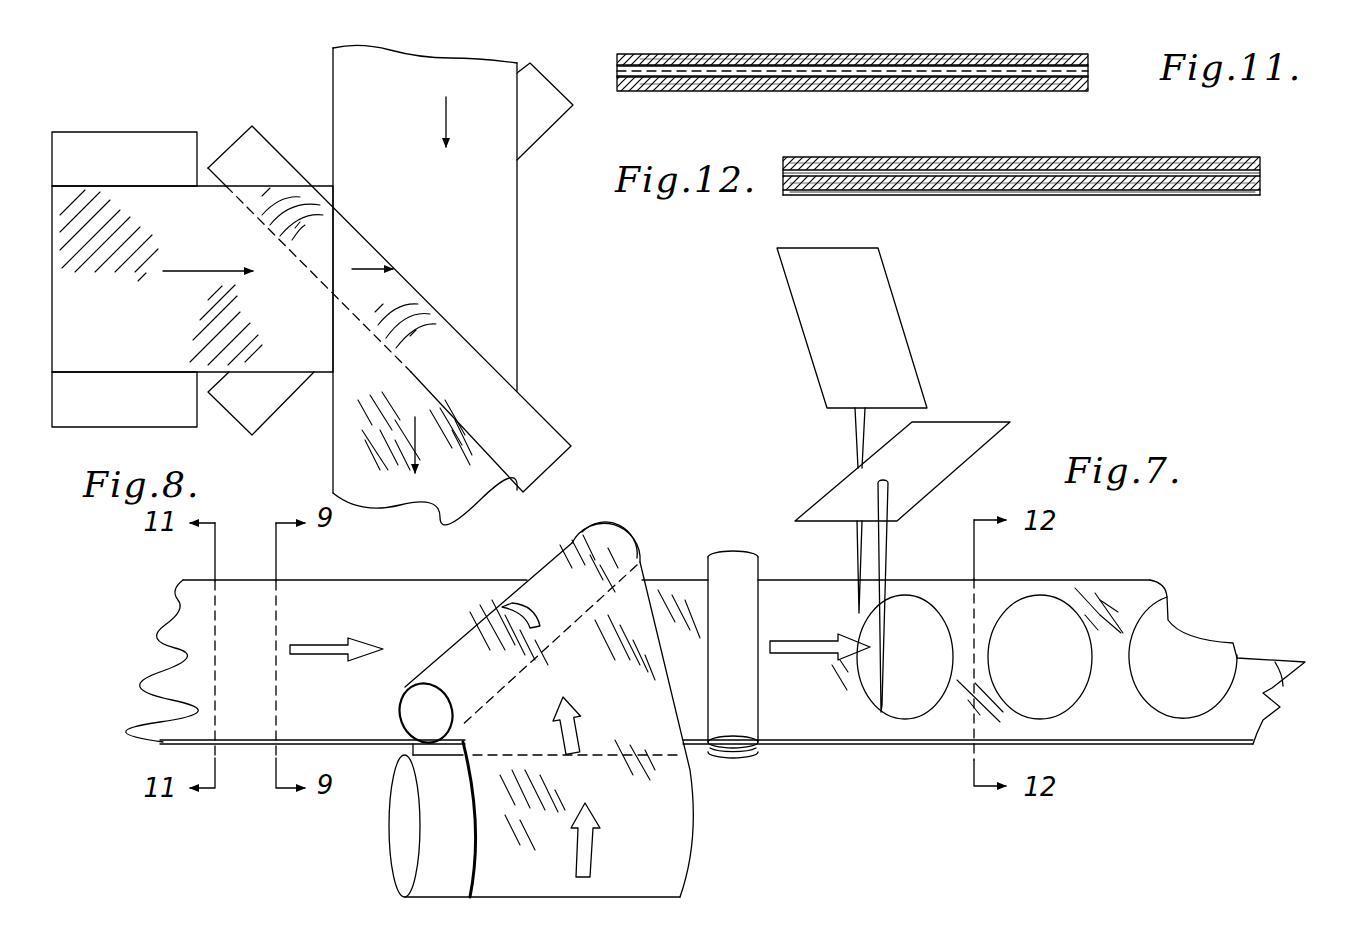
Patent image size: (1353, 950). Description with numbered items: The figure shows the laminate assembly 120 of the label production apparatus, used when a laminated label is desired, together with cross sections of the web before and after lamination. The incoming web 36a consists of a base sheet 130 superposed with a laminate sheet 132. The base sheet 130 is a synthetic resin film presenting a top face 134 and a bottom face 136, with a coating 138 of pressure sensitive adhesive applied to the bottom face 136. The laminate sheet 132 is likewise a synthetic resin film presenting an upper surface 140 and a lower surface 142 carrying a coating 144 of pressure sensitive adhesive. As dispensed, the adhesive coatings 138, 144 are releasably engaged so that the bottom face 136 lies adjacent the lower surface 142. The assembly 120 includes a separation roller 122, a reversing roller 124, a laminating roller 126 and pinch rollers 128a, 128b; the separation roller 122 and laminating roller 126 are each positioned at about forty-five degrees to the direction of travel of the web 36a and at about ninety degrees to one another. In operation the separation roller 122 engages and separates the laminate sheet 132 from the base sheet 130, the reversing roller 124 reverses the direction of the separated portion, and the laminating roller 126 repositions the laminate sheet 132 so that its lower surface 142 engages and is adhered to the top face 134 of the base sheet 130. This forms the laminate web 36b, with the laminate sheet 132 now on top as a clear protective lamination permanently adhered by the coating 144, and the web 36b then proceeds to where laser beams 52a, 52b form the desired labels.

In FIG. 8, the web 36a is at (347, 109).
In FIG. 7, the web 36a is at (248, 727).
In FIG. 8, the laminate web 36b is at (503, 503).
In FIG. 7, the laminate web 36b is at (663, 577).
In FIG. 7, the laser beam 52a is at (856, 433).
In FIG. 7, the laser beam 52b is at (886, 542).
In FIG. 7, the laminate assembly 120 is at (645, 500).
In FIG. 8, the separation roller 122 is at (527, 129).
In FIG. 7, the reversing roller 124 is at (418, 862).
In FIG. 8, the laminating roller 126 is at (523, 430).
In FIG. 7, the laminating roller 126 is at (427, 715).
In FIG. 7, the pinch roller 128a is at (740, 565).
In FIG. 7, the pinch roller 128b is at (752, 758).
In FIG. 8, the base sheet 130 is at (485, 292).
In FIG. 7, the base sheet 130 is at (432, 597).
In FIG. 11, the base sheet 130 is at (618, 56).
In FIG. 12, the base sheet 130 is at (1260, 183).
In FIG. 8, the laminate sheet 132 is at (158, 345).
In FIG. 7, the laminate sheet 132 is at (687, 803).
In FIG. 11, the laminate sheet 132 is at (678, 88).
In FIG. 12, the laminate sheet 132 is at (1260, 163).
In FIG. 11, the top face 134 is at (758, 50).
In FIG. 12, the top face 134 is at (1043, 176).
In FIG. 11, the bottom face 136 is at (713, 80).
In FIG. 12, the bottom face 136 is at (898, 190).
In FIG. 11, the coating of pressure sensitive adhesive 138 is at (616, 71).
In FIG. 12, the coating of pressure sensitive adhesive 138 is at (1260, 193).
In FIG. 8, the upper surface 140 is at (347, 458).
In FIG. 11, the upper surface 140 is at (977, 77).
In FIG. 12, the upper surface 140 is at (1108, 157).
In FIG. 8, the lower surface 142 is at (295, 348).
In FIG. 7, the lower surface 142 is at (677, 877).
In FIG. 11, the lower surface 142 is at (903, 88).
In FIG. 12, the lower surface 142 is at (1100, 178).
In FIG. 11, the coating of pressure sensitive adhesive 144 is at (617, 75).
In FIG. 12, the coating of pressure sensitive adhesive 144 is at (1260, 173).